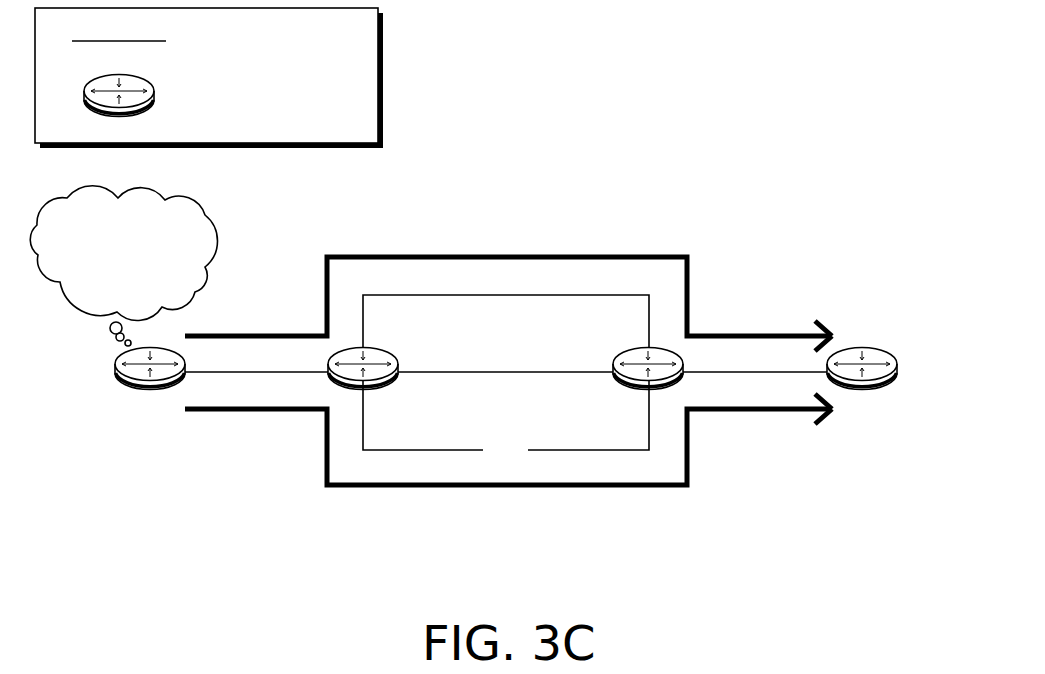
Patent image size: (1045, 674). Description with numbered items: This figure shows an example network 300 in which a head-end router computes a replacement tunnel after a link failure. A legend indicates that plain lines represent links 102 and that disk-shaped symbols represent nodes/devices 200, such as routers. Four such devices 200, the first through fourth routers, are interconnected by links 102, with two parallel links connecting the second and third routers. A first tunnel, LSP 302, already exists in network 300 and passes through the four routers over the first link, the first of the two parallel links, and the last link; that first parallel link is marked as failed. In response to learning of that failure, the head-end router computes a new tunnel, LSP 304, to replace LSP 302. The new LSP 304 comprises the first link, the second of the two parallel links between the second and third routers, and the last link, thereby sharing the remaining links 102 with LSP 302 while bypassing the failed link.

The link 102 is at (193, 41).
The node/device 200 is at (215, 96).
The network 300 is at (875, 72).
The LSP 302 is at (595, 490).
The LSP 304 is at (593, 252).